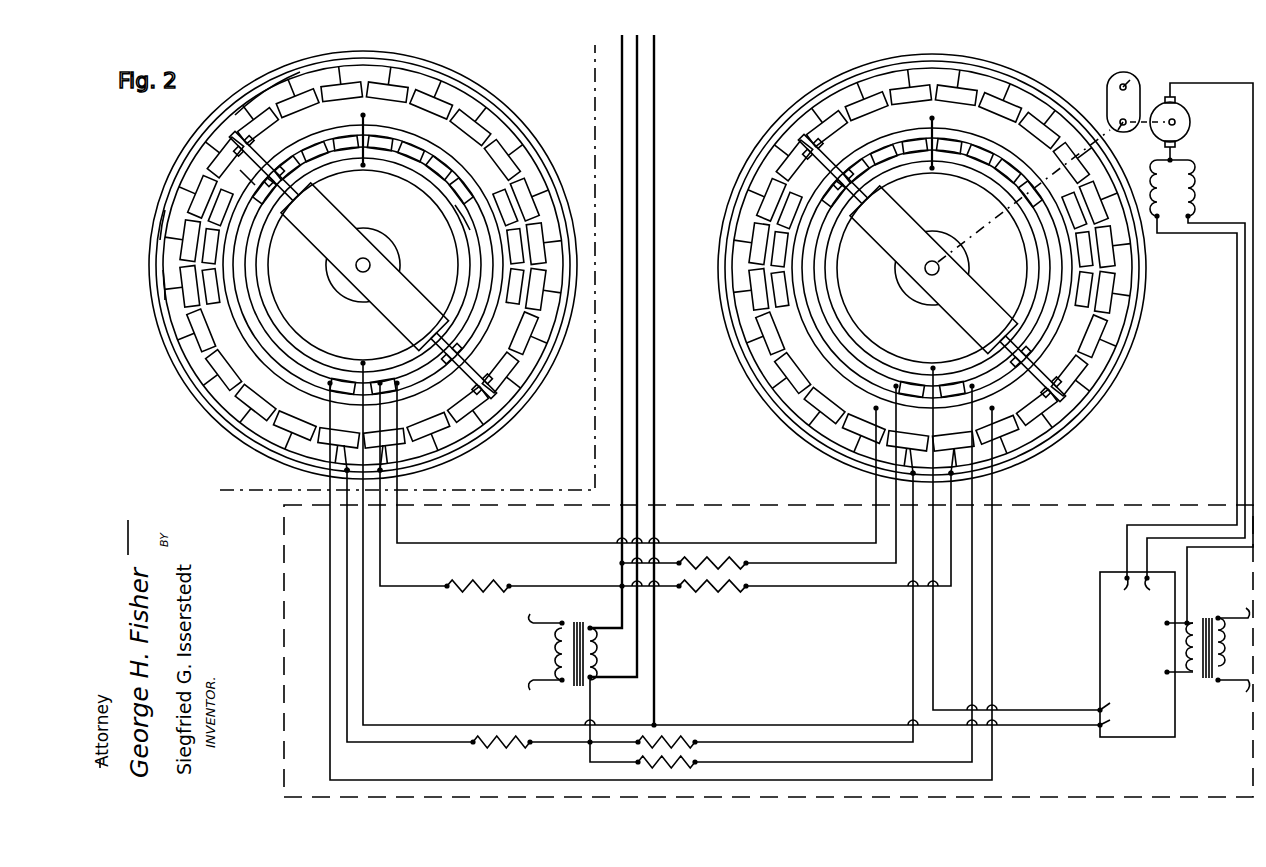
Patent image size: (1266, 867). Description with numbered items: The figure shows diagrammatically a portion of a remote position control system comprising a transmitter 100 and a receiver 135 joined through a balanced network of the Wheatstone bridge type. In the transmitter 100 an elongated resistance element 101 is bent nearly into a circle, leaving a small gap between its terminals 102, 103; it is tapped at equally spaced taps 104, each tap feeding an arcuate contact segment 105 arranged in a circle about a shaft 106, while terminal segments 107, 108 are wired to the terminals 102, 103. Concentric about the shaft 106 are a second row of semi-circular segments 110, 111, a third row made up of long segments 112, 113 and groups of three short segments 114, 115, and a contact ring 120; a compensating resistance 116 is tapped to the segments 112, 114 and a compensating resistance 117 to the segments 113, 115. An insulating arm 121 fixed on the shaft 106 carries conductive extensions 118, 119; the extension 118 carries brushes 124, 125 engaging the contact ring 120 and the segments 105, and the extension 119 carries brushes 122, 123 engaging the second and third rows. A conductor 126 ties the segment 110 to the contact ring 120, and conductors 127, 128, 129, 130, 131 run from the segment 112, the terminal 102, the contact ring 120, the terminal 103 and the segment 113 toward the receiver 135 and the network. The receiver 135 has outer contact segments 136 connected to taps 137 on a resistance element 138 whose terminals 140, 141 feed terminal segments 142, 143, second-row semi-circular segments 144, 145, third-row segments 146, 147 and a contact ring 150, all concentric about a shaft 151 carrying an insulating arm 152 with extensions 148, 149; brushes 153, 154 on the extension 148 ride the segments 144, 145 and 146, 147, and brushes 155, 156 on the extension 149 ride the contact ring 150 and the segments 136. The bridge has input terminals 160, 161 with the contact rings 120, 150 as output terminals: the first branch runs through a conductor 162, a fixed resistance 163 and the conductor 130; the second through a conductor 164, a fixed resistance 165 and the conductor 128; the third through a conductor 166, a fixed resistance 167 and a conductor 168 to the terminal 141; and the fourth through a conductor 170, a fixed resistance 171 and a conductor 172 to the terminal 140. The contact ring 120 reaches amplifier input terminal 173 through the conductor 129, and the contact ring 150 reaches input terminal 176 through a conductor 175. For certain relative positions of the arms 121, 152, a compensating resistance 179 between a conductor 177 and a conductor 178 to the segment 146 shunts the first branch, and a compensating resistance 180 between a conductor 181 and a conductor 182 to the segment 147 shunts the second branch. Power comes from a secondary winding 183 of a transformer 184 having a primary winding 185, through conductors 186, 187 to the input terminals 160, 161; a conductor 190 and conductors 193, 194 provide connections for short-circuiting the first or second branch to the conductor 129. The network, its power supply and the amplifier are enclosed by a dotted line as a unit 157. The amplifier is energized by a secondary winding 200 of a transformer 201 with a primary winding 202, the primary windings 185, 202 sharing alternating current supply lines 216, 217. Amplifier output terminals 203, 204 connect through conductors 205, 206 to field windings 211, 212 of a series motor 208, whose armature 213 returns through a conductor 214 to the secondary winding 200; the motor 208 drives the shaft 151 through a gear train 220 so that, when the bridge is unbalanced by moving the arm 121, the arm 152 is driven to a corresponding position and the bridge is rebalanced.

The transmitter 100 is at (552, 67).
The resistance element 101 is at (525, 400).
The terminal 102 is at (345, 471).
The terminal 103 is at (382, 471).
The taps 104 is at (527, 385).
The arcuate contact segments 105 is at (465, 435).
The shaft 106 is at (372, 258).
The terminal segment 107 is at (338, 448).
The terminal segment 108 is at (372, 448).
The semi-circular segment 110 is at (215, 245).
The semi-circular segment 111 is at (215, 272).
The long segment 112 is at (318, 350).
The long segment 113 is at (495, 235).
The short segments 114 is at (315, 161).
The short segments 115 is at (388, 161).
The compensating resistance 116 is at (258, 185).
The compensating resistance 117 is at (478, 188).
The extension 118 is at (418, 340).
The extension 119 is at (303, 185).
The contact ring 120 is at (305, 322).
The arm 121 is at (402, 290).
The brush 122 is at (262, 140).
The brush 123 is at (292, 190).
The brush 124 is at (422, 318).
The brush 125 is at (505, 378).
The conductor 126 is at (364, 172).
The conductor 127 is at (329, 767).
The conductor 128 is at (366, 742).
The conductor 129 is at (408, 722).
The conductor 130 is at (423, 586).
The conductor 131 is at (457, 544).
The receiver 135 is at (732, 79).
The contact segments 136 is at (1022, 455).
The taps 137 is at (1040, 438).
The resistance element 138 is at (1130, 335).
The terminal 140 is at (911, 474).
The terminal 141 is at (953, 474).
The terminal segment 142 is at (911, 450).
The terminal segment 143 is at (948, 450).
The semi-circular segment 144 is at (815, 270).
The semi-circular segment 145 is at (1060, 232).
The semi-circular segment 146 is at (815, 295).
The semi-circular segment 147 is at (1040, 275).
The extension 148 is at (850, 282).
The extension 149 is at (992, 330).
The contact ring 150 is at (870, 350).
The shaft 151 is at (939, 256).
The arm 152 is at (960, 276).
The brush 153 is at (858, 162).
The brush 154 is at (852, 172).
The brush 155 is at (994, 325).
The brush 156 is at (1078, 395).
The unit 157 is at (702, 506).
The input terminal 160 is at (620, 565).
The input terminal 161 is at (605, 736).
The conductor 162 is at (542, 603).
The fixed resistance 163 is at (486, 584).
The conductor 164 is at (550, 744).
The fixed resistance 165 is at (511, 750).
The conductor 166 is at (679, 590).
The fixed resistance 167 is at (746, 590).
The conductor 168 is at (862, 590).
The conductor 170 is at (620, 746).
The fixed resistance 171 is at (681, 746).
The conductor 172 is at (912, 660).
The input terminal 173 is at (1118, 719).
The conductor 175 is at (935, 648).
The input terminal 176 is at (1110, 699).
The conductor 177 is at (670, 563).
The conductor 178 is at (858, 566).
The compensating resistance 179 is at (760, 476).
The compensating resistance 180 is at (692, 766).
The conductor 181 is at (618, 765).
The conductor 182 is at (863, 762).
The secondary winding 183 is at (594, 650).
The transformer 184 is at (575, 695).
The primary winding 185 is at (556, 648).
The conductor 186 is at (620, 604).
The conductor 187 is at (592, 705).
The conductor 190 is at (623, 401).
The conductor 193 is at (640, 372).
The conductor 194 is at (657, 397).
The secondary winding 200 is at (1202, 682).
The transformer 201 is at (1206, 600).
The primary winding 202 is at (1227, 655).
The output terminal 203 is at (1111, 590).
The output terminal 204 is at (1148, 590).
The conductor 205 is at (1237, 380).
The conductor 206 is at (1245, 405).
The series motor 208 is at (1146, 142).
The field winding 211 is at (1155, 180).
The field winding 212 is at (1192, 182).
The armature 213 is at (1162, 98).
The conductor 214 is at (1253, 445).
The alternating current supply line 216 is at (533, 623).
The alternating current supply line 217 is at (533, 680).
The gear train 220 is at (1118, 80).